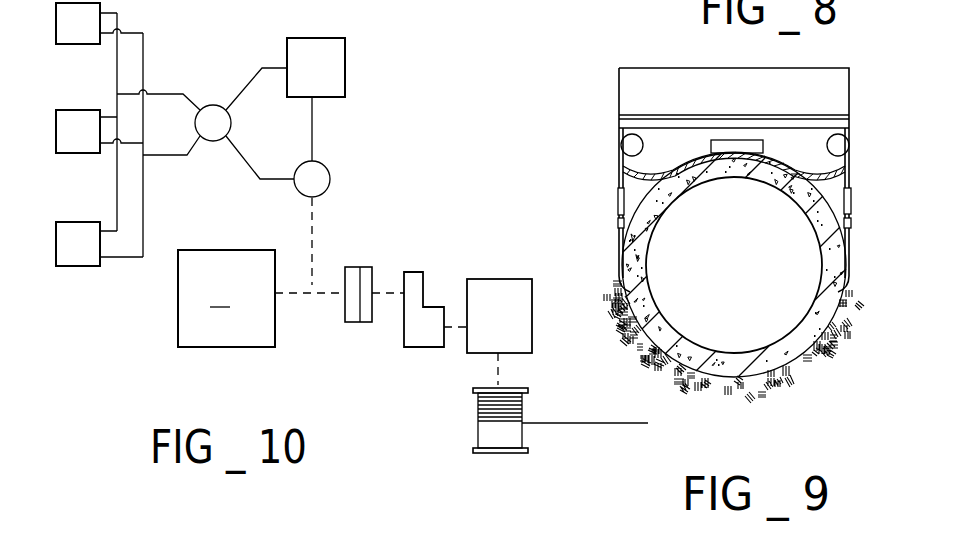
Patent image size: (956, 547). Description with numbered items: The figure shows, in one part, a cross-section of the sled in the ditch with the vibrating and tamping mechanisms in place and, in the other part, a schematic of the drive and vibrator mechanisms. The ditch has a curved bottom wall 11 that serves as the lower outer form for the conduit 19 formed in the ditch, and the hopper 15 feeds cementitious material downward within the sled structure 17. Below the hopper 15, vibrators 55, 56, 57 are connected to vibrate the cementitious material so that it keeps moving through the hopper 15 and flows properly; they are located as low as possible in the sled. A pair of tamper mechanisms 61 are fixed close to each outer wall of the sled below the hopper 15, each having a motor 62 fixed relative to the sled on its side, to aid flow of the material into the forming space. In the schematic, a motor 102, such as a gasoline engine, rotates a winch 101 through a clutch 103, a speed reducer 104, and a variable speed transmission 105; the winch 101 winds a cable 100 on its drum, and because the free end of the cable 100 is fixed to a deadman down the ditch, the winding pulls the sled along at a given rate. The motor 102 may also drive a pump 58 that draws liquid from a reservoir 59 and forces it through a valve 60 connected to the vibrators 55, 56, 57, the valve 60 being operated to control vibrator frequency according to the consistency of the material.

In FIG. 9, the curved bottom wall 11 is at (812, 355).
In FIG. 9, the hopper 15 is at (683, 166).
In FIG. 9, the housing 17 is at (828, 78).
In FIG. 9, the conduit 19 is at (822, 297).
In FIG. 10, the vibrator 55 is at (90, 42).
In FIG. 9, the vibrator 55 is at (619, 200).
In FIG. 10, the vibrator 56 is at (90, 150).
In FIG. 9, the vibrator 56 is at (742, 150).
In FIG. 10, the vibrator 57 is at (88, 262).
In FIG. 9, the vibrator 57 is at (851, 203).
In FIG. 10, the pump 58 is at (318, 170).
In FIG. 10, the reservoir 59 is at (340, 90).
In FIG. 10, the valve 60 is at (210, 108).
In FIG. 9, the tamper mechanism 61 is at (619, 224).
In FIG. 9, the motor 62 is at (621, 145).
In FIG. 10, the cable 100 is at (582, 424).
In FIG. 10, the winch 101 is at (473, 450).
In FIG. 10, the motor 102 is at (190, 331).
In FIG. 10, the clutch 103 is at (364, 267).
In FIG. 10, the speed reducer 104 is at (424, 272).
In FIG. 10, the variable speed transmission 105 is at (497, 279).